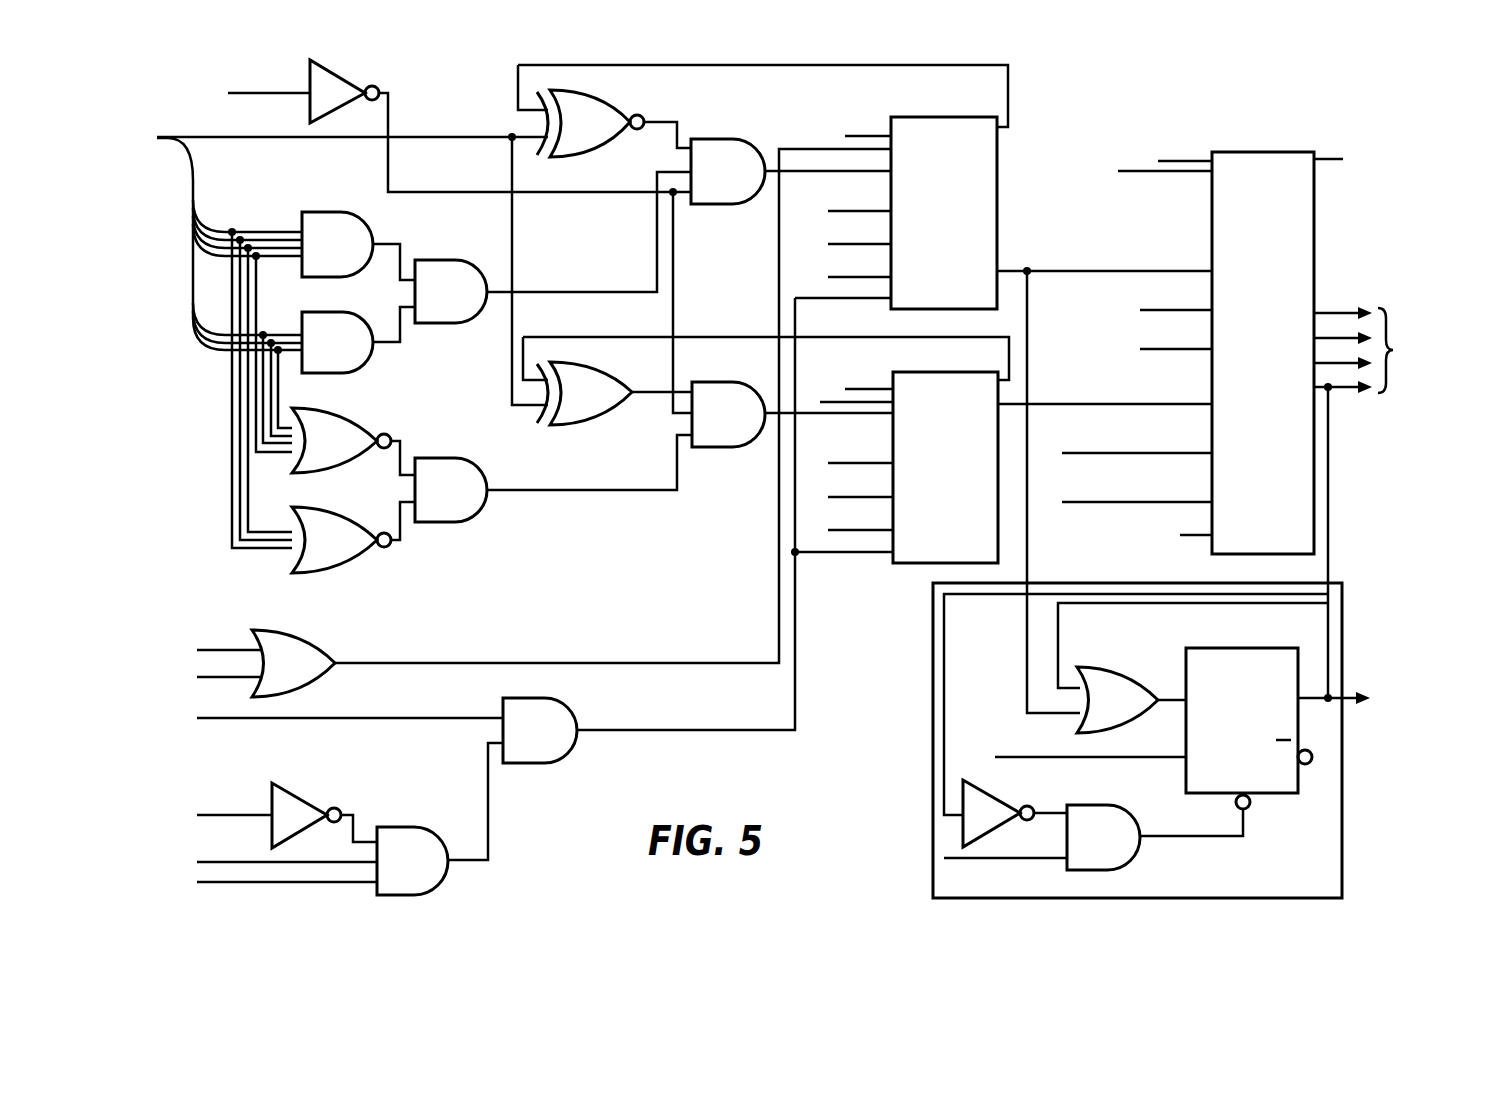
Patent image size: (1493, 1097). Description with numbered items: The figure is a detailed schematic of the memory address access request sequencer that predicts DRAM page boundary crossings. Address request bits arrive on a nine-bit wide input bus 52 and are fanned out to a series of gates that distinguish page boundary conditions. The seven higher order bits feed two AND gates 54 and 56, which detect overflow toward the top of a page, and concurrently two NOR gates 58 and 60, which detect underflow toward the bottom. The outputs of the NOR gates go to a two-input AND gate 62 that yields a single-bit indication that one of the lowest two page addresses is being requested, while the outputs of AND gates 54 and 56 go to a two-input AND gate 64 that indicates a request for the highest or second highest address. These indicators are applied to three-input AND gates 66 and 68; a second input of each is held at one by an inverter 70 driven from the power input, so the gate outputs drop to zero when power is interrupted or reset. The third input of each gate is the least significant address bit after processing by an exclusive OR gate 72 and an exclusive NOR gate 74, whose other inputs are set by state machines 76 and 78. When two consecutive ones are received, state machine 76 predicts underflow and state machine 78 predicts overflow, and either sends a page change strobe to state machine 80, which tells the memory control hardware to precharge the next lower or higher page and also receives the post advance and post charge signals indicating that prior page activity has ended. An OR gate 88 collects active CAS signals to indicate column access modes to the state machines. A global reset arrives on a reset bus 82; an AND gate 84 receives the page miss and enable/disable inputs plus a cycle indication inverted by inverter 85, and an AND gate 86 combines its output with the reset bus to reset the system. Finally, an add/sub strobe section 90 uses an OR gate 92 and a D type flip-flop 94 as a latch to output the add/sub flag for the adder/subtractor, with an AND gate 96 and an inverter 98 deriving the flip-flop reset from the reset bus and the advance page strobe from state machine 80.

The input bus 52 is at (217, 355).
The AND gate 54 is at (312, 212).
The AND gate 56 is at (322, 312).
The NOR gate 58 is at (318, 408).
The NOR gate 60 is at (347, 507).
The AND gate 62 is at (435, 458).
The AND gate 64 is at (428, 260).
The AND gate 66 is at (700, 382).
The AND gate 68 is at (713, 139).
The inverter 70 is at (345, 78).
The exclusive OR gate 72 is at (588, 425).
The exclusive NOR gate 74 is at (616, 100).
The state machine 76 is at (912, 563).
The state machine 78 is at (1000, 196).
The state machine 80 is at (1314, 243).
The reset bus 82 is at (388, 718).
The AND gate 84 is at (430, 827).
The inverter 85 is at (300, 800).
The AND gate 86 is at (581, 698).
The OR gate 88 is at (298, 630).
The add/sub strobe section 90 is at (933, 828).
The OR gate 92 is at (1090, 667).
The D type flip-flop 94 is at (1186, 680).
The AND gate 96 is at (1128, 805).
The inverter 98 is at (1005, 805).